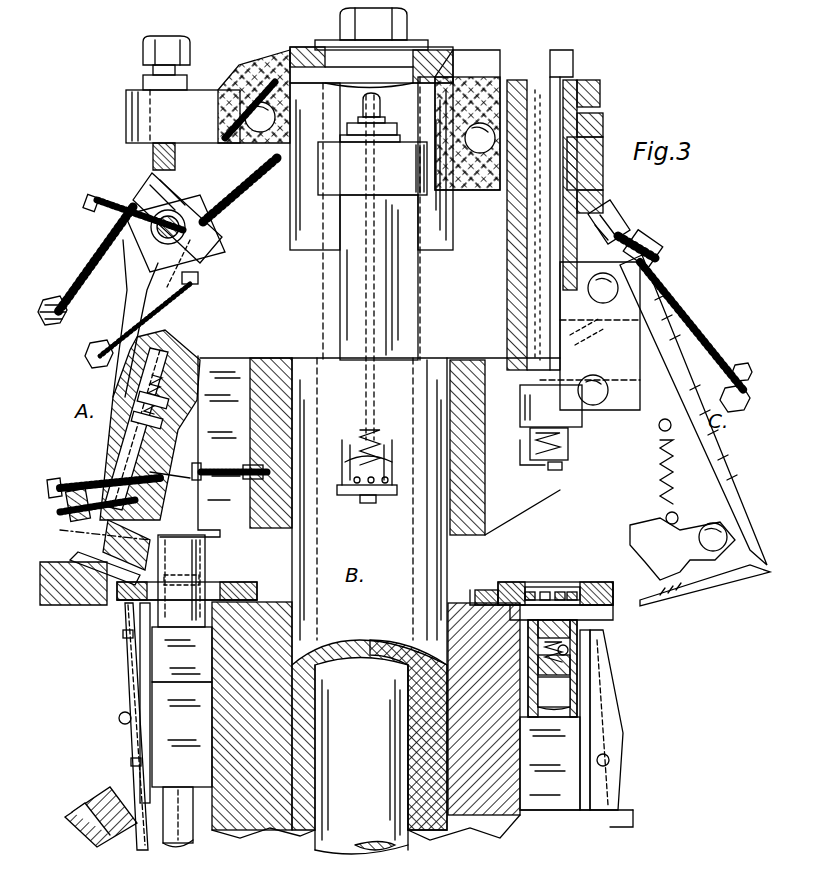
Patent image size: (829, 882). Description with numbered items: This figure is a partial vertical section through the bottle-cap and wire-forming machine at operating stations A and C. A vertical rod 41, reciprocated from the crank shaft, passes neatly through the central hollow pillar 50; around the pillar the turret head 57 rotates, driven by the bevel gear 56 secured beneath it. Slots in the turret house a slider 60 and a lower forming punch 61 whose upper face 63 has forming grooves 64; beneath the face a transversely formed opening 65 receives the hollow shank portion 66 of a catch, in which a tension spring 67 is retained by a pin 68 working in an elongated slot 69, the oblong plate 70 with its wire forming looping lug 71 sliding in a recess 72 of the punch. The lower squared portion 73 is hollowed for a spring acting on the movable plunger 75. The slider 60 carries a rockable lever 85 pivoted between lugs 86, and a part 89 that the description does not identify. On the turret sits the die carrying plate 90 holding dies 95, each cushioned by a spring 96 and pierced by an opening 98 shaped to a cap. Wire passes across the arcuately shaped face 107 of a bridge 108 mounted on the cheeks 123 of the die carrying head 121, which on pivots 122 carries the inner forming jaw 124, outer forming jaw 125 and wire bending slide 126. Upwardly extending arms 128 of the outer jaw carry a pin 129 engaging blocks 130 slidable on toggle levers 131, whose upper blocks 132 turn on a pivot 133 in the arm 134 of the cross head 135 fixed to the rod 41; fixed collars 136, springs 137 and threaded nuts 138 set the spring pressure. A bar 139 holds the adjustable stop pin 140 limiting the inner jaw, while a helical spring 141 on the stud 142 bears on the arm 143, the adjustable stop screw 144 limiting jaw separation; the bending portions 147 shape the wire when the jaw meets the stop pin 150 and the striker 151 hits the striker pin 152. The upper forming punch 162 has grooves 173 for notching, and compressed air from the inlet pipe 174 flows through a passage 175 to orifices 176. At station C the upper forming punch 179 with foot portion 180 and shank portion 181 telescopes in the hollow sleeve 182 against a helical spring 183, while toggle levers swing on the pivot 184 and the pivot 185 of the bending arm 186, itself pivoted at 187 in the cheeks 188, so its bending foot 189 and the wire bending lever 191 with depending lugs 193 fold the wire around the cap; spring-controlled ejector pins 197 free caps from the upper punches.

The vertical rod 41 is at (402, 338).
The central hollow pillar 50 is at (440, 568).
The bevel gear 56 is at (95, 795).
The turret head 57 is at (180, 680).
The slider 60 is at (145, 665).
The lower forming punch 61 is at (200, 570).
The upper face 63 is at (605, 595).
The forming grooves 64 is at (590, 612).
The transversely formed opening 65 is at (575, 672).
The hollow shank portion 66 is at (568, 650).
The tension spring 67 is at (558, 592).
The pin 68 is at (528, 592).
The elongated slot 69 is at (543, 592).
The oblong plate 70 is at (560, 638).
The wire forming looping lug 71 is at (565, 650).
The recess 72 is at (575, 665).
The lower squared portion 73 is at (170, 692).
The movable plunger 75 is at (178, 825).
The rockable lever 85 is at (128, 650).
The lugs 86 is at (125, 735).
The rod 89 is at (130, 625).
The die carrying plate 90 is at (208, 564).
The dies 95 is at (262, 580).
The spring 96 is at (590, 588).
The opening 98 is at (572, 590).
The arcuately shaped face 107 is at (140, 560).
The bridge 108 is at (150, 600).
The die carrying head 121 is at (190, 340).
The pivots 122 is at (203, 365).
The cheeks 123 is at (215, 360).
The inner forming jaw 124 is at (160, 430).
The outer forming jaw 125 is at (155, 452).
The wire bending slide 126 is at (128, 530).
The upwardly extending arms 128 is at (210, 255).
The pin 129 is at (200, 222).
The blocks 130 is at (160, 210).
The toggle levers 131 is at (243, 185).
The blocks 132 is at (222, 88).
The pivot 133 is at (262, 105).
The arm 134 is at (190, 110).
The cross head 135 is at (447, 50).
The fixed collars 136 is at (150, 185).
The springs 137 is at (63, 312).
The threaded nuts 138 is at (97, 345).
The bar 139 is at (62, 512).
The adjustable stop pin 140 is at (62, 485).
The helical spring 141 is at (110, 210).
The stud 142 is at (93, 196).
The arm 143 is at (95, 259).
The adjustable stop screw 144 is at (180, 488).
The bending portions 147 is at (80, 556).
The stop pin 150 is at (230, 470).
The striker 151 is at (160, 55).
The striker pin 152 is at (200, 278).
The upper forming punch 162 is at (340, 497).
The grooves 173 is at (372, 492).
The inlet pipe 174 is at (365, 102).
The passage 175 is at (355, 272).
The orifices 176 is at (396, 493).
The upper forming punch 179 is at (560, 402).
The foot portion 180 is at (570, 462).
The shank portion 181 is at (512, 238).
The hollow sleeve 182 is at (520, 302).
The helical spring 183 is at (517, 283).
The pivot 184 is at (475, 120).
The pivot 185 is at (622, 258).
The bending arm 186 is at (690, 470).
The pivot 187 is at (560, 368).
The cheeks 188 is at (490, 505).
The bending foot 189 is at (690, 588).
The wire bending lever 191 is at (660, 540).
The depending lugs 193 is at (705, 552).
The ejector pins 197 is at (362, 503).